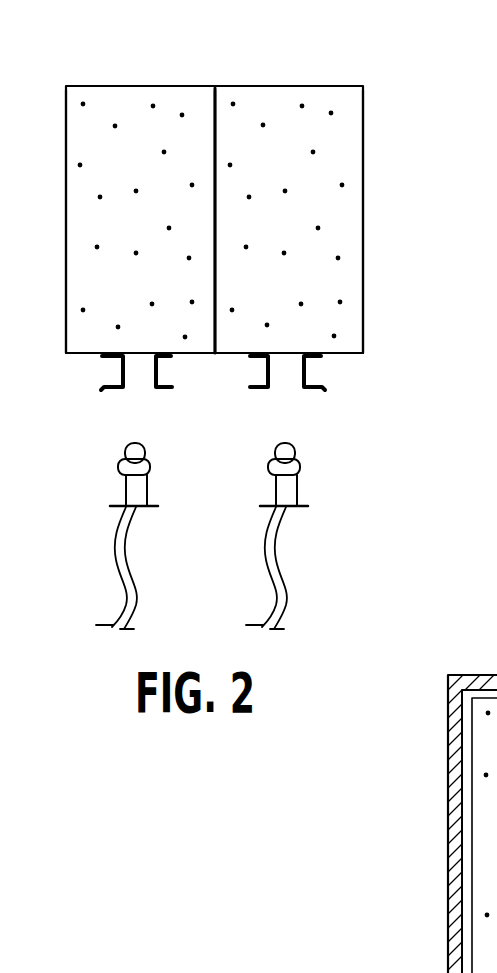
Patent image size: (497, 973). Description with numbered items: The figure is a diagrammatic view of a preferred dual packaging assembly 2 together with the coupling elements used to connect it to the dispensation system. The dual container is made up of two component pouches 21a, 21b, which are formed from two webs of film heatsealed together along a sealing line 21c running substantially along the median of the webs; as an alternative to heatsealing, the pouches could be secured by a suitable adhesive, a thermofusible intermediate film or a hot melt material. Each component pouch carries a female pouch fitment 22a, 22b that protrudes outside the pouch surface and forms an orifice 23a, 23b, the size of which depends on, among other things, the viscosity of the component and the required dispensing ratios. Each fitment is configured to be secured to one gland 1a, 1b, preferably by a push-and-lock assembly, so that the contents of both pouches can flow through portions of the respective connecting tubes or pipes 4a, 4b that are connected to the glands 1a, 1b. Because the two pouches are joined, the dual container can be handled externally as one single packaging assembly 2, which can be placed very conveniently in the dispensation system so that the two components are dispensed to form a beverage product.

The dual packaging assembly 2 is at (410, 178).
The component pouch 21a is at (215, 64).
The component pouch 21b is at (366, 65).
The sealing line 21c is at (216, 250).
The female pouch fitment 22a is at (103, 389).
The female pouch fitment 22b is at (312, 389).
The orifice 23a is at (140, 384).
The orifice 23b is at (282, 384).
The gland 1a is at (102, 480).
The gland 1b is at (322, 480).
The connecting tube 4a is at (108, 552).
The connecting tube 4b is at (293, 550).